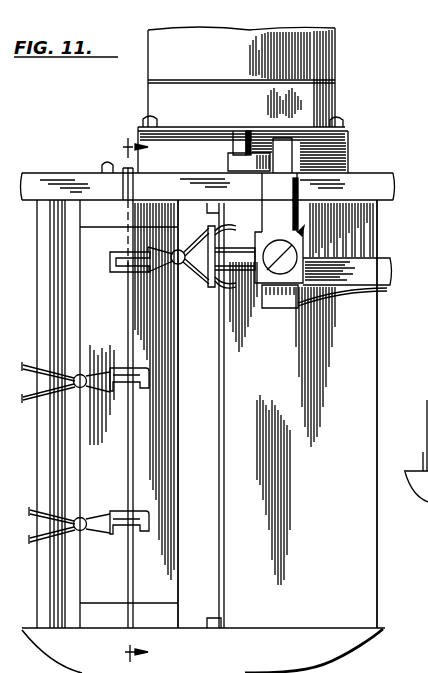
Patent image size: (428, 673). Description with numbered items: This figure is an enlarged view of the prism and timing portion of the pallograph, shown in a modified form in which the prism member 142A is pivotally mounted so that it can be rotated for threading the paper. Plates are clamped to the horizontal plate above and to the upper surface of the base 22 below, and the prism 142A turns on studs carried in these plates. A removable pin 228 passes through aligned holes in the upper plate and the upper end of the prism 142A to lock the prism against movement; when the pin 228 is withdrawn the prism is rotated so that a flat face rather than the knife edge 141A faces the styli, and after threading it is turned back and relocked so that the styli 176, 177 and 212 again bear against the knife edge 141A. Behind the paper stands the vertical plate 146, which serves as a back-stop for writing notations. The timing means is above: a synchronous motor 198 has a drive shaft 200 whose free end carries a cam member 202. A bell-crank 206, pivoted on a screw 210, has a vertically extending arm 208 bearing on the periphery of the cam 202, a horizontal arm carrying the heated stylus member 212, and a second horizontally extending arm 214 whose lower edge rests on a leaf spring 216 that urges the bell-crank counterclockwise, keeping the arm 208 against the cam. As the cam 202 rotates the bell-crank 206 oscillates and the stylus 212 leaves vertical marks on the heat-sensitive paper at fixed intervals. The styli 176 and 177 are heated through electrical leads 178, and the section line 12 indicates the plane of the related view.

The section line 12- 12 is at (269, 400).
The base member 22 is at (345, 642).
The knife edge 141A is at (128, 470).
The modified prism member 142A is at (152, 577).
The vertical plate 146 is at (353, 567).
The stylus 176 is at (138, 528).
The stylus 177 is at (143, 384).
The electrical leads 178 is at (235, 218).
The synchronous motor 198 is at (324, 53).
The drive shaft 200 is at (244, 138).
The cam member 202 is at (230, 160).
The bell-crank 206 is at (300, 230).
The vertically extending arm 208 is at (284, 169).
The screw 210 is at (290, 265).
The heated stylus member 212 is at (123, 255).
The second horizontally extending arm 214 is at (383, 266).
The leaf spring 216 is at (360, 290).
The pin 228 is at (118, 167).